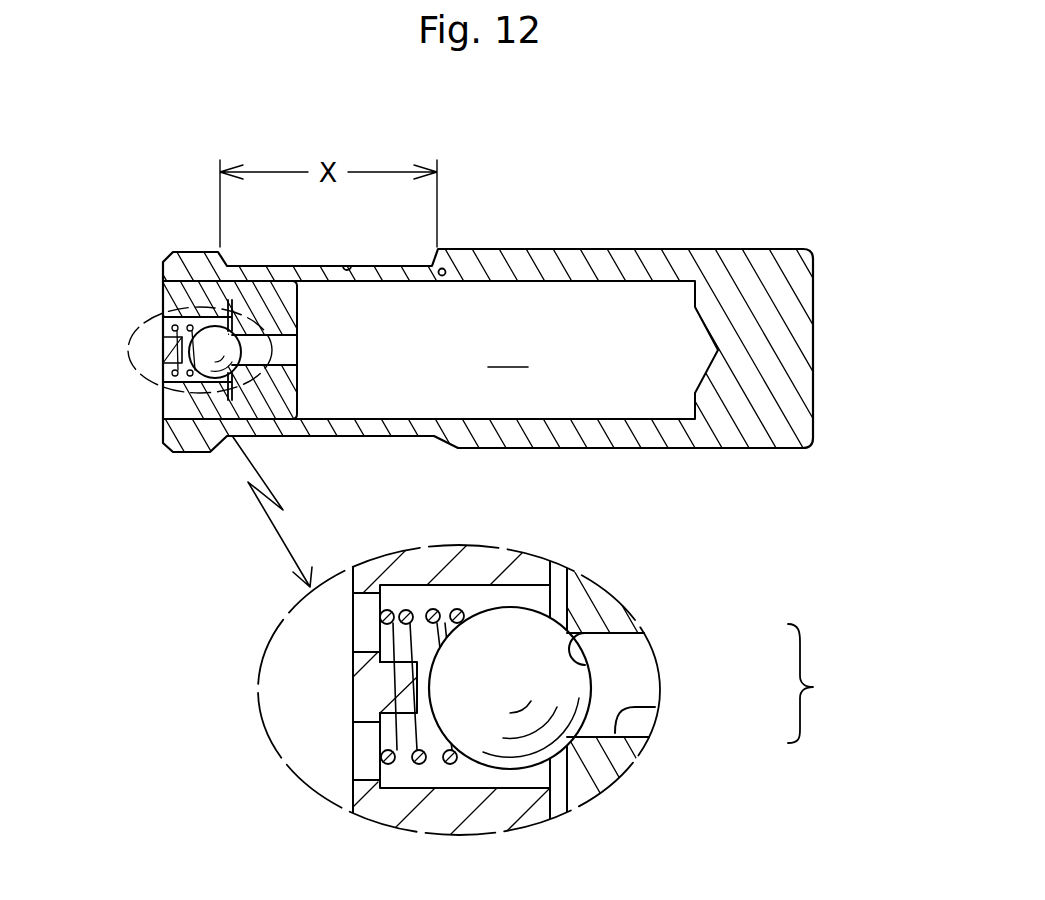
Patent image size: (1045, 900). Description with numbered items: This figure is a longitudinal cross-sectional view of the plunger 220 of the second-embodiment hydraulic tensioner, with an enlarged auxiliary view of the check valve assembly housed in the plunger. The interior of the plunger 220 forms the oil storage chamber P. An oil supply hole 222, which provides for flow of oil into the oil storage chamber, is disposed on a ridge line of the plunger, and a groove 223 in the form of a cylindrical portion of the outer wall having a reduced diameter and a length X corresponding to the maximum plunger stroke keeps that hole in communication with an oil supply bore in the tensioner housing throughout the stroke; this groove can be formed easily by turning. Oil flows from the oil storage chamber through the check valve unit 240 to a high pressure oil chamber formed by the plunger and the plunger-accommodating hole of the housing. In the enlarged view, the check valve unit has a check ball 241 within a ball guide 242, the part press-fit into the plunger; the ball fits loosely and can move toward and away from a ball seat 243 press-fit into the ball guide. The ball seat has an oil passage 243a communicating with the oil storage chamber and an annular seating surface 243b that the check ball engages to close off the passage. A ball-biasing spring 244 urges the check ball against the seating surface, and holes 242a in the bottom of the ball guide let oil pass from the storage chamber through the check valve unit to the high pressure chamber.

The plunger 220 is at (806, 344).
The oil supply hole 222 is at (442, 268).
The groove 223 is at (347, 266).
The check valve unit 240 is at (172, 407).
The check ball 241 is at (522, 622).
The ball guide 242 is at (490, 565).
The holes 242a is at (365, 780).
The ball seat 243 is at (830, 683).
The oil passage 243a is at (655, 707).
The annular seating surface 243b is at (585, 667).
The ball-biasing spring 244 is at (432, 607).